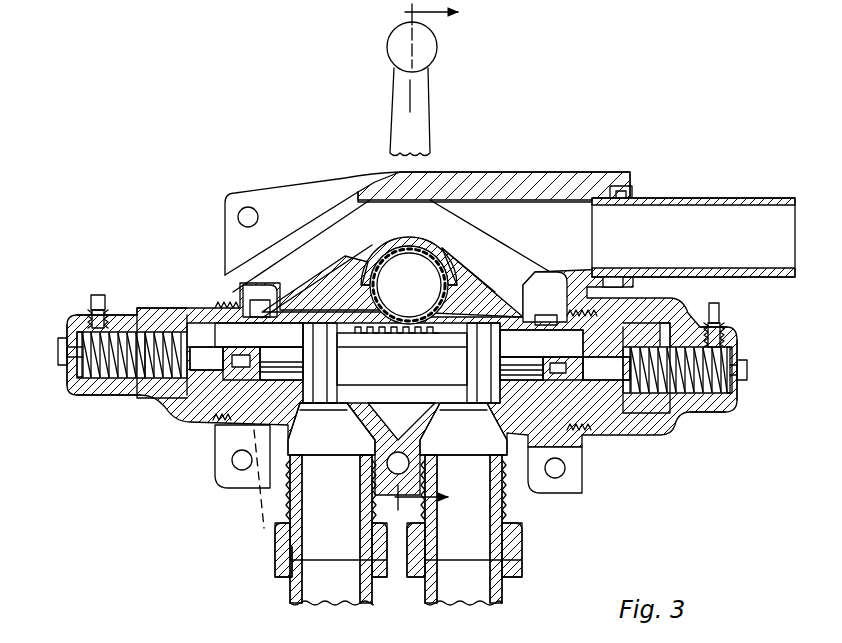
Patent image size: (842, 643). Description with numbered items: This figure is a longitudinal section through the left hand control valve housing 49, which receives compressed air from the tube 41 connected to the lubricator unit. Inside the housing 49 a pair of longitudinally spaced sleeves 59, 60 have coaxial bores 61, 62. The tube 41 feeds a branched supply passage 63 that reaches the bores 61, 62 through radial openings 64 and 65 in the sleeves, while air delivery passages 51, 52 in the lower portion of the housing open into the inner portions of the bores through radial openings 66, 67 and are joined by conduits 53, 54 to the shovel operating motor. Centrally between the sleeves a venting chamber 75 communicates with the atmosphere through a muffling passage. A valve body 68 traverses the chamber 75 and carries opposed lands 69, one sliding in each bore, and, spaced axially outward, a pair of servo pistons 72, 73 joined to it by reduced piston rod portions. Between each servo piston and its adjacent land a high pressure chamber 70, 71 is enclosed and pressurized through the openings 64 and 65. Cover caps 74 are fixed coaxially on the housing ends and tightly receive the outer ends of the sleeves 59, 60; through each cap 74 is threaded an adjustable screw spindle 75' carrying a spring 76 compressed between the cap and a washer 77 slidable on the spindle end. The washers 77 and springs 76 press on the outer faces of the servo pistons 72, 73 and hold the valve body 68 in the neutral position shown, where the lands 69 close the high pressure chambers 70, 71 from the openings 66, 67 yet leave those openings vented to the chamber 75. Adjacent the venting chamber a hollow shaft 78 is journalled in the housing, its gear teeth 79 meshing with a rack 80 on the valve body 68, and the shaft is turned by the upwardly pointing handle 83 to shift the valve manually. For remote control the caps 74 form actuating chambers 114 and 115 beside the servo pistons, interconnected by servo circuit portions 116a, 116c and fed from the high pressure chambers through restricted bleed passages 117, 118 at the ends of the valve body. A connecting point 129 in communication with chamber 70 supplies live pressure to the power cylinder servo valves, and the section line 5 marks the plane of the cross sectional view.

The section line 5- 5 is at (434, 266).
The handle 83 is at (418, 101).
The branched supply passage 63 is at (355, 217).
The tube 41 is at (677, 222).
The hollow shaft 78 is at (396, 262).
The gear teeth 79 is at (405, 322).
The sleeve 59 is at (176, 402).
The servo piston 72 is at (224, 395).
The servo piston 73 is at (596, 385).
The connecting point 129 is at (237, 491).
The washer 77 is at (215, 418).
The cover cap 74 is at (93, 392).
The coaxial bore 62 is at (702, 418).
The spring 76 is at (152, 340).
The adjustable screw spindle 75' is at (427, 359).
The actuating chamber 114 is at (112, 376).
The actuating chamber 115 is at (705, 392).
The coaxial bore 61 is at (142, 392).
The sleeve 60 is at (617, 402).
The high pressure chamber 70 is at (242, 342).
The high pressure chamber 71 is at (576, 346).
The radial opening 64 is at (262, 320).
The radial opening 65 is at (545, 322).
The restricted bleed passage 117 is at (240, 372).
The restricted bleed passage 118 is at (560, 378).
The land 69 is at (316, 372).
The valve body 68 is at (402, 359).
The rack 80 is at (399, 355).
The radial opening 66 is at (340, 422).
The radial opening 67 is at (490, 422).
The venting chamber 75 is at (402, 402).
The air delivery passage 51 is at (310, 433).
The air delivery passage 52 is at (556, 430).
The conduit 53 is at (318, 578).
The conduit 54 is at (470, 590).
The servo circuit portion 116a is at (92, 298).
The servo circuit portion 116c is at (719, 310).
The control valve housing 49 is at (268, 292).